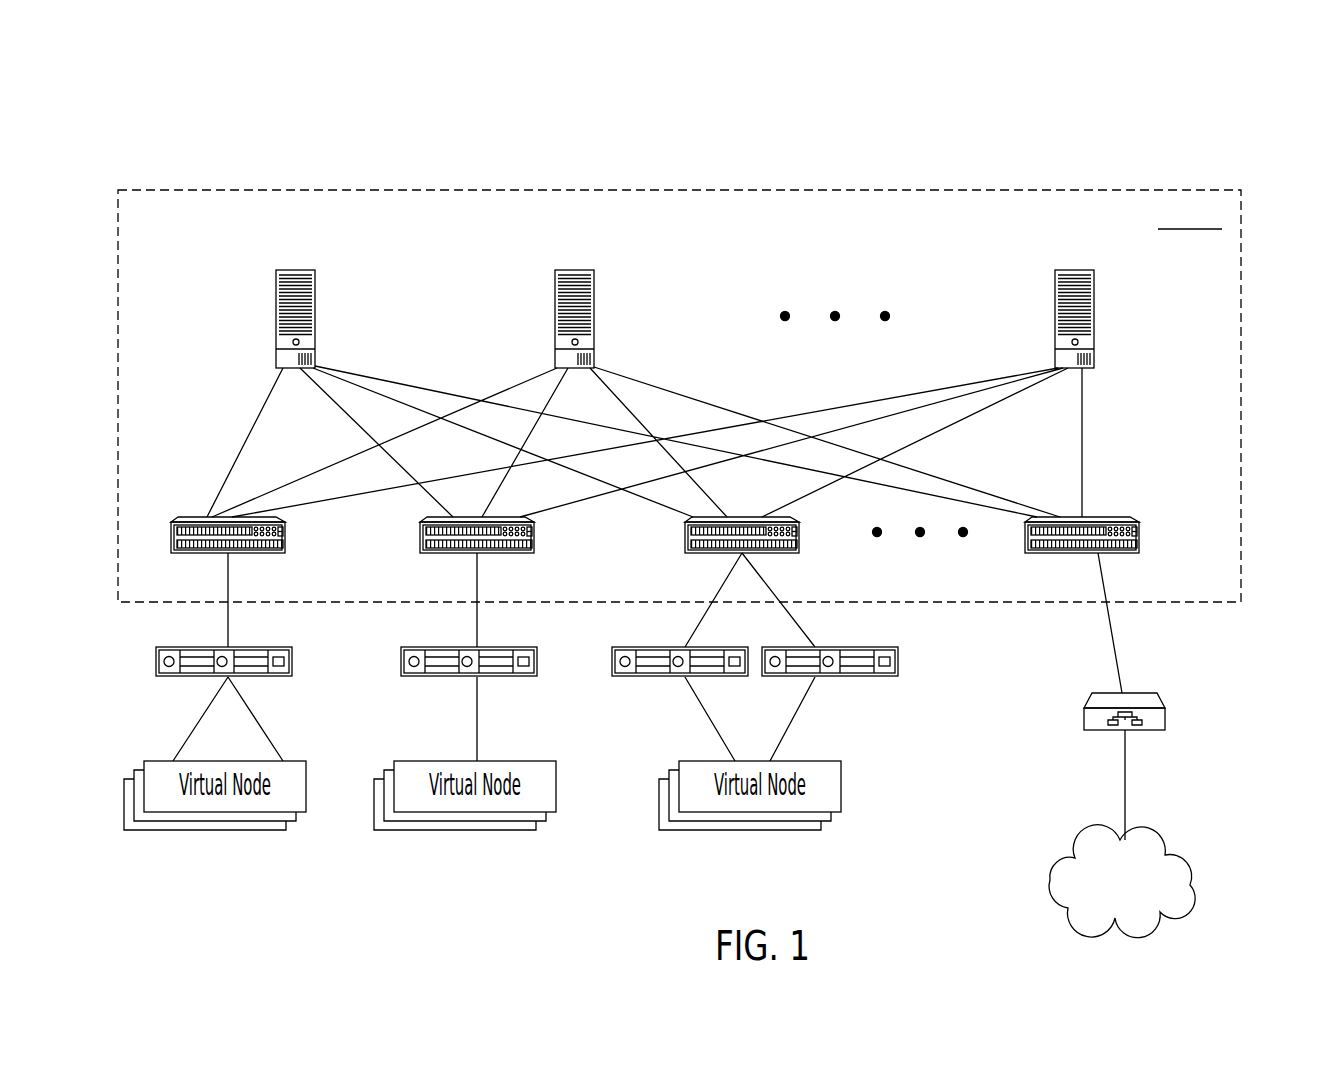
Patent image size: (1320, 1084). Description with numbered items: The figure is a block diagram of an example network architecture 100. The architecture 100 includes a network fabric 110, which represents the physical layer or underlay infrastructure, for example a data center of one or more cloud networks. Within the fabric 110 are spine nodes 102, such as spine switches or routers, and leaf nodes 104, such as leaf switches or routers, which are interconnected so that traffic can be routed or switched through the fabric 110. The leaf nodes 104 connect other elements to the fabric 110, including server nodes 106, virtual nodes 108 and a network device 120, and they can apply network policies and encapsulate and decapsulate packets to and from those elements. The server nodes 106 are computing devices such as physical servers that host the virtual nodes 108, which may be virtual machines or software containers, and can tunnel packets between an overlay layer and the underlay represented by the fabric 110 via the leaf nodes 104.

The network architecture 100 is at (1242, 119).
The spine nodes 102 is at (276, 312).
The leaf nodes 104 is at (285, 540).
The server nodes 106 is at (156, 660).
The virtual nodes 108 is at (306, 778).
The network fabric 110 is at (1224, 220).
The network device 120 is at (1084, 716).